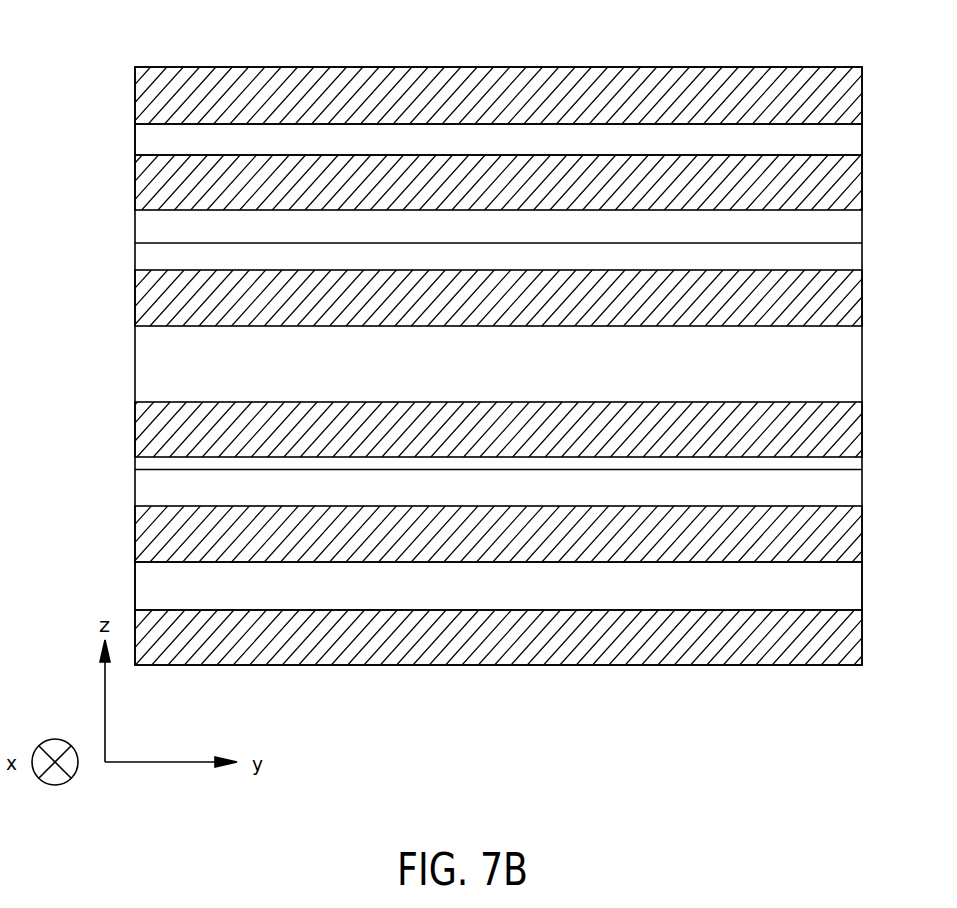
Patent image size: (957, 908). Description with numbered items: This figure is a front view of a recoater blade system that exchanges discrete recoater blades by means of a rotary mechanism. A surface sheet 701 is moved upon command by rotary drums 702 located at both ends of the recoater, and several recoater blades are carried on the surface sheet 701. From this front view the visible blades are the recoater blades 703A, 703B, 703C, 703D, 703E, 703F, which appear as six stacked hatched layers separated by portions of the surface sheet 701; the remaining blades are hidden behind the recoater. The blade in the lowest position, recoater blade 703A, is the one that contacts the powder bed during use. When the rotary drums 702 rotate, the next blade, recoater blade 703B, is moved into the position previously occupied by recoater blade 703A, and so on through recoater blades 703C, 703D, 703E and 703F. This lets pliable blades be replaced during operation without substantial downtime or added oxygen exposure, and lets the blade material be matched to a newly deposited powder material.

The surface sheet 701 is at (135, 365).
The rotary drum 702 is at (507, 147).
The recoater blade 703A is at (843, 640).
The recoater blade 703B is at (843, 538).
The recoater blade 703C is at (843, 432).
The recoater blade 703D is at (843, 307).
The recoater blade 703E is at (843, 190).
The recoater blade 703F is at (843, 93).